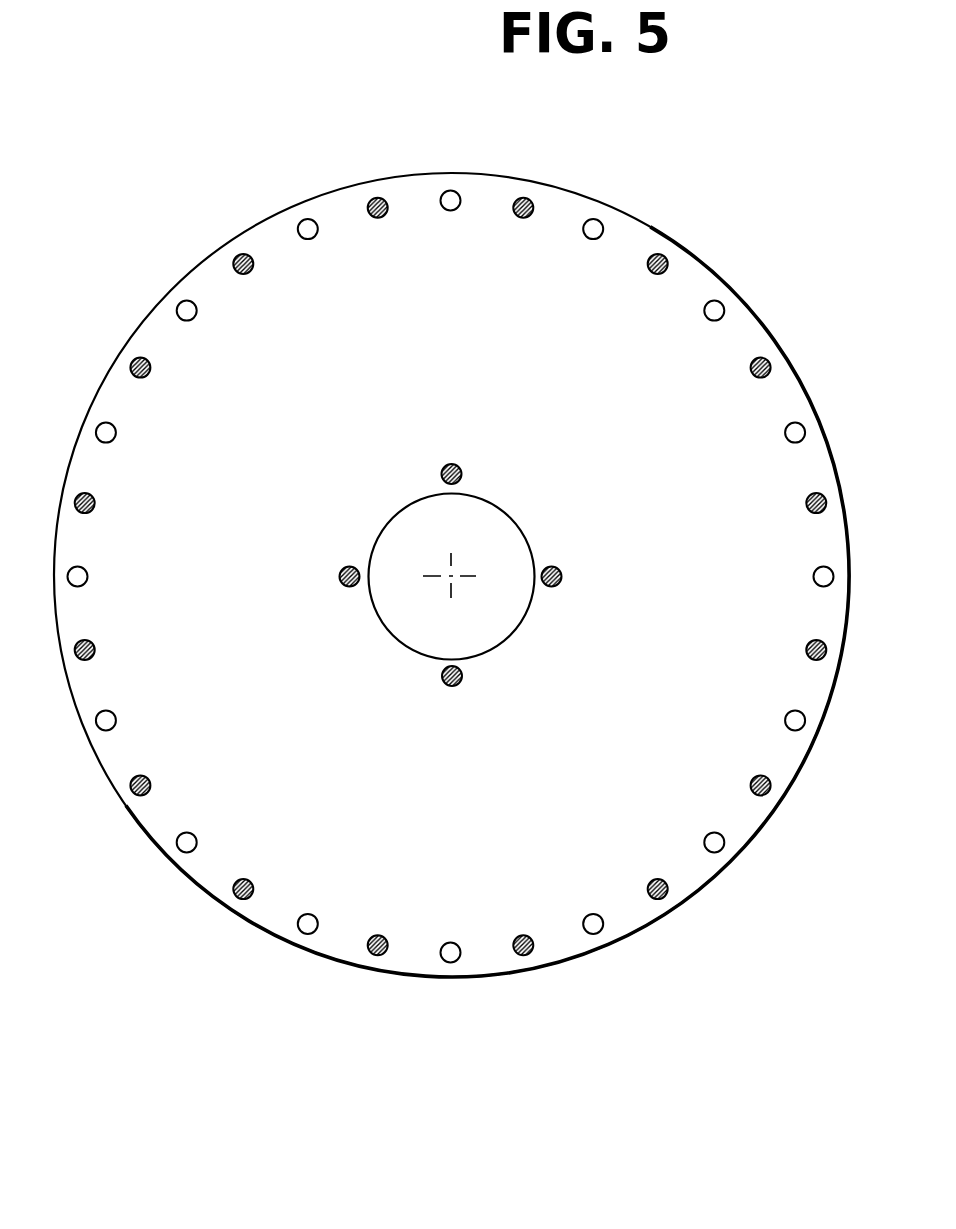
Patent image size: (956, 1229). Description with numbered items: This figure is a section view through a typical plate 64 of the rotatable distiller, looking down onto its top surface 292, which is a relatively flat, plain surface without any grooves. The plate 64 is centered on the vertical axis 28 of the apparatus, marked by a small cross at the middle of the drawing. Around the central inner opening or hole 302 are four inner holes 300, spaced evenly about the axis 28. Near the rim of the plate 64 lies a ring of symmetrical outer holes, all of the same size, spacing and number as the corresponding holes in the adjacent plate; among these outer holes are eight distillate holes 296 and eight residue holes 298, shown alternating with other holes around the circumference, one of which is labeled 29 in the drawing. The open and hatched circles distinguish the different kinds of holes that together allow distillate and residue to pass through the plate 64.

The vertical axis 28 is at (438, 559).
The threaded bolt hole 29 is at (376, 965).
The plate 64 is at (200, 898).
The top surface 292 is at (221, 790).
The distillate holes 296 is at (448, 979).
The residue holes 298 is at (304, 946).
The inner holes 300 is at (438, 692).
The inner opening 302 is at (513, 619).